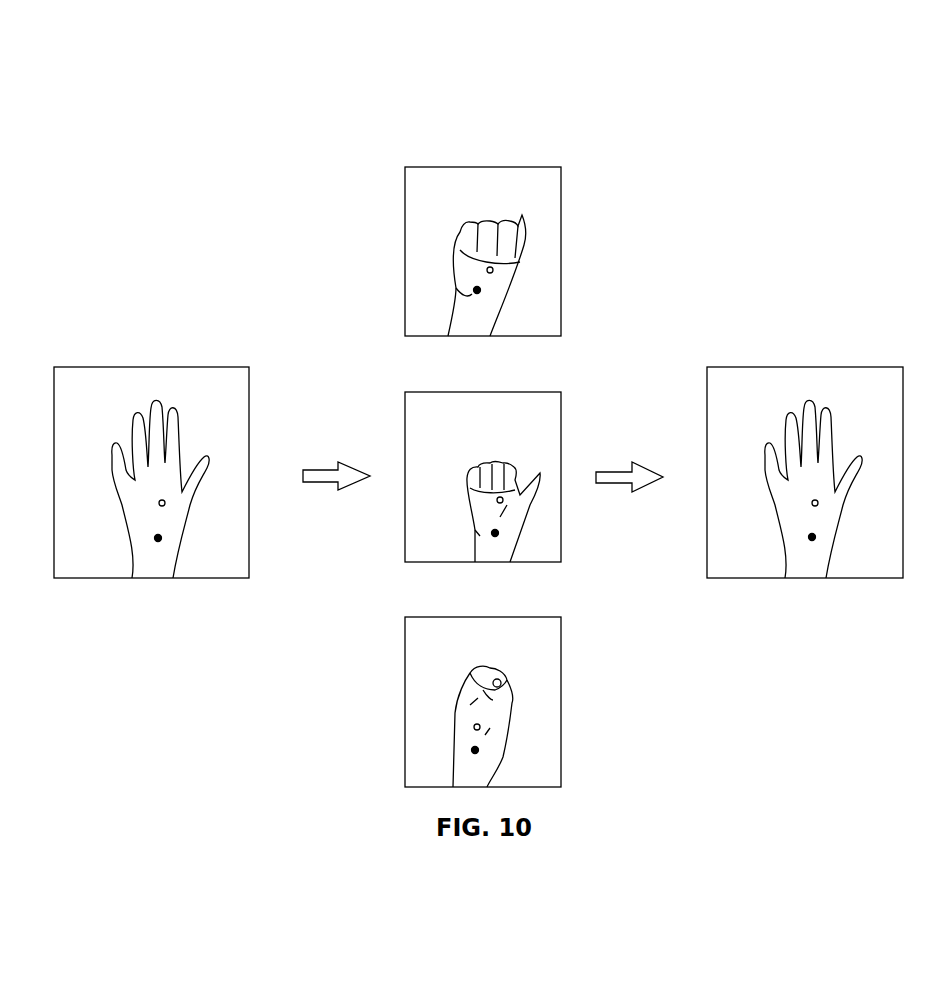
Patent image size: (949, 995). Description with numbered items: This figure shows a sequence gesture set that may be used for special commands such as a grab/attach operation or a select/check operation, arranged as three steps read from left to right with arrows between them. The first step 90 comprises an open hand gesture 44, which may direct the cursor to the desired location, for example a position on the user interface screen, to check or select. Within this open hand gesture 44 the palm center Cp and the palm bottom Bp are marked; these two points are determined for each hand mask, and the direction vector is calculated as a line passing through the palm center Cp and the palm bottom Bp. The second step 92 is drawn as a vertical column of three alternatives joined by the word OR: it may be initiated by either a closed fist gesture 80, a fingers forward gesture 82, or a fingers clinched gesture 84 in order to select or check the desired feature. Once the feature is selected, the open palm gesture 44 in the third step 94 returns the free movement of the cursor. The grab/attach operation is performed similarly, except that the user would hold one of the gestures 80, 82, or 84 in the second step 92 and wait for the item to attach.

The first step 90 is at (152, 305).
The second step 92 is at (484, 140).
The third step 94 is at (807, 305).
The open hand gesture 44 is at (175, 412).
The closed fist gesture 80 is at (522, 215).
The fingers forward gesture 82 is at (540, 473).
The fingers clinched gesture 84 is at (508, 688).
The palm center Cp is at (165, 505).
The palm bottom Bp is at (160, 539).